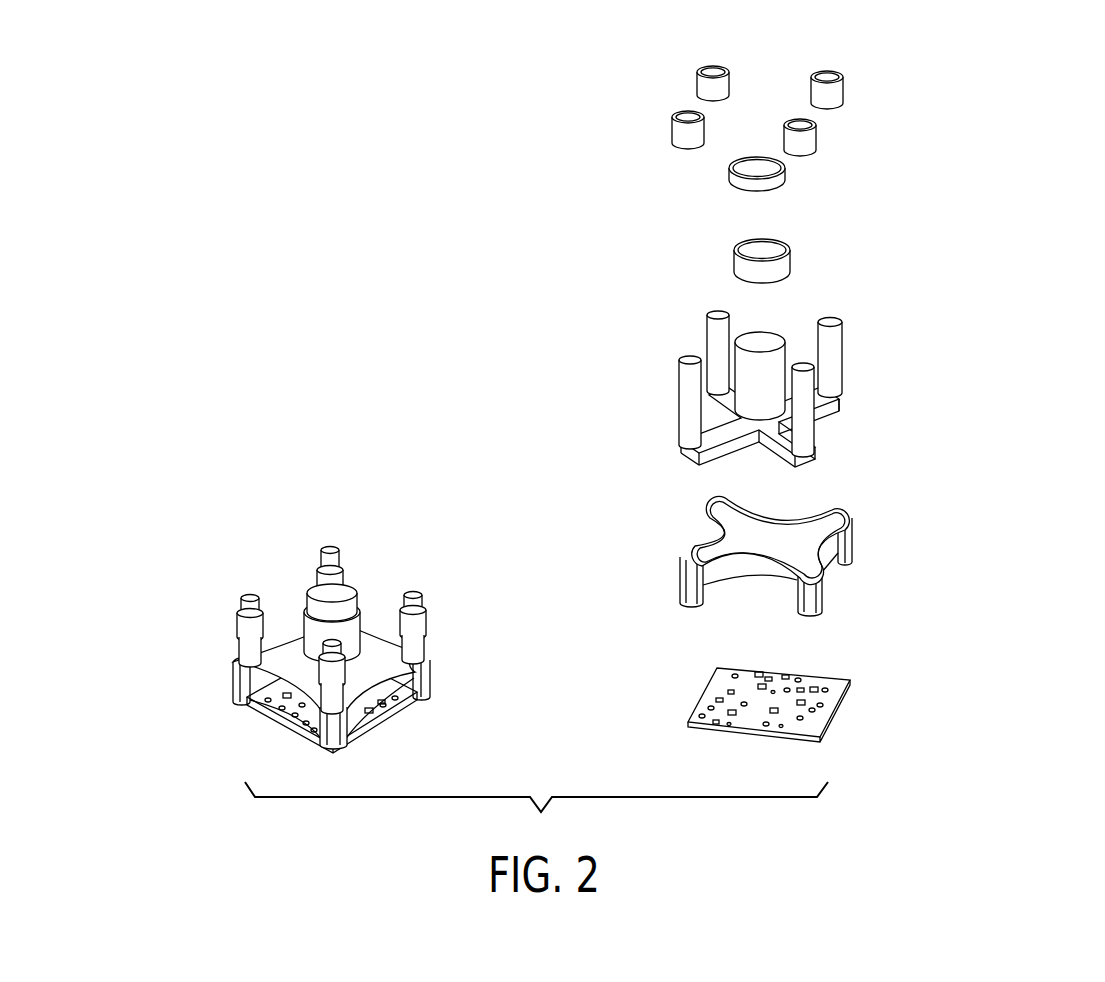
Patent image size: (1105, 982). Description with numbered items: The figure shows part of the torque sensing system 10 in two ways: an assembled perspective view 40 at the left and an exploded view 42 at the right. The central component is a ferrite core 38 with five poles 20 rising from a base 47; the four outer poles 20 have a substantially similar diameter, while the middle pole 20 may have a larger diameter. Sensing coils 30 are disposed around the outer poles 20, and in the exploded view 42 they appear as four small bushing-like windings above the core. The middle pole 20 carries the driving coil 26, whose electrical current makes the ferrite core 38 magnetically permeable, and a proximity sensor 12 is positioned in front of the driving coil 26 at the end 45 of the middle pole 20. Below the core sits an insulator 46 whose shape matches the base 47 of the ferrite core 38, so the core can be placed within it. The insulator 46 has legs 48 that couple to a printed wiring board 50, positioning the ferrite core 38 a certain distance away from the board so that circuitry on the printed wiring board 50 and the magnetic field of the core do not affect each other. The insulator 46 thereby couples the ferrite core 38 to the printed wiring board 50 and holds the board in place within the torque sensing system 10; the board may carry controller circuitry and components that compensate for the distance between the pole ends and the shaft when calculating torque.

The torque sensing system 10 is at (395, 730).
The proximity sensor 12 is at (773, 193).
The poles 20 is at (708, 305).
The driving coil 26 is at (730, 250).
The sensing coils 30 is at (687, 82).
The ferrite core 38 is at (848, 352).
The perspective view 40 is at (253, 527).
The exploded view 42 is at (962, 118).
The end of the middle pole 45 is at (773, 325).
The insulator 46 is at (705, 512).
The base of the ferrite core 47 is at (755, 438).
The legs 48 is at (680, 602).
The printed wiring board 50 is at (843, 717).